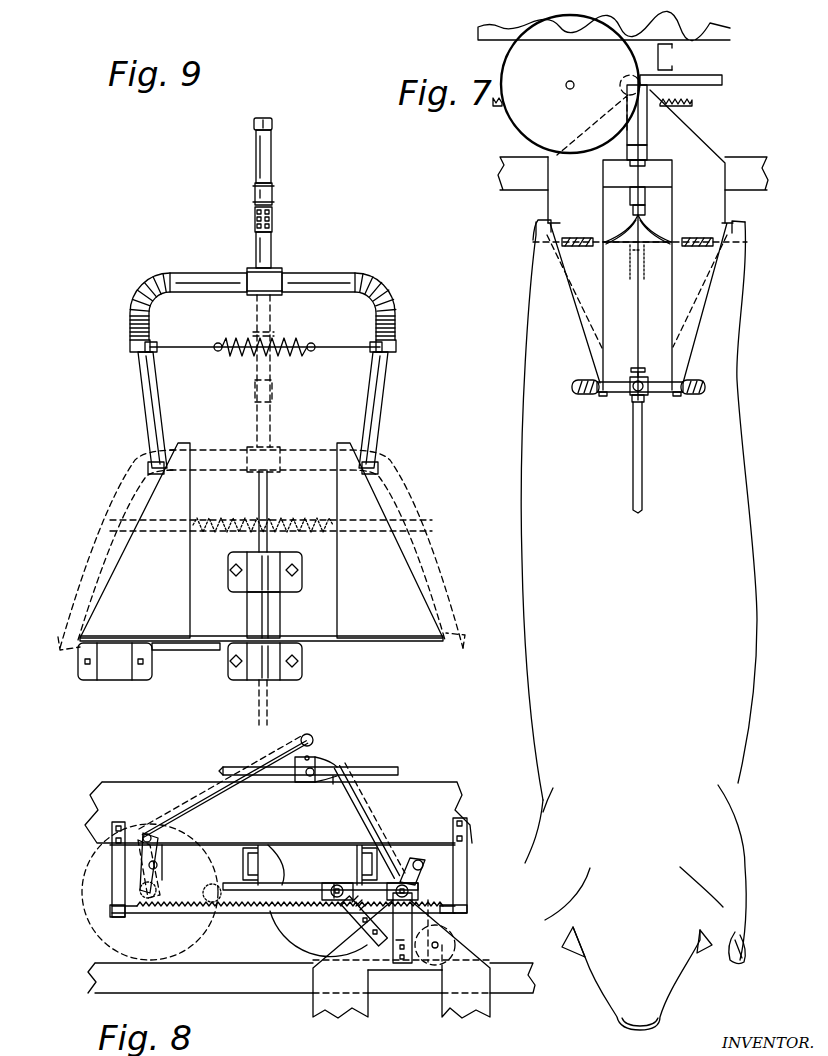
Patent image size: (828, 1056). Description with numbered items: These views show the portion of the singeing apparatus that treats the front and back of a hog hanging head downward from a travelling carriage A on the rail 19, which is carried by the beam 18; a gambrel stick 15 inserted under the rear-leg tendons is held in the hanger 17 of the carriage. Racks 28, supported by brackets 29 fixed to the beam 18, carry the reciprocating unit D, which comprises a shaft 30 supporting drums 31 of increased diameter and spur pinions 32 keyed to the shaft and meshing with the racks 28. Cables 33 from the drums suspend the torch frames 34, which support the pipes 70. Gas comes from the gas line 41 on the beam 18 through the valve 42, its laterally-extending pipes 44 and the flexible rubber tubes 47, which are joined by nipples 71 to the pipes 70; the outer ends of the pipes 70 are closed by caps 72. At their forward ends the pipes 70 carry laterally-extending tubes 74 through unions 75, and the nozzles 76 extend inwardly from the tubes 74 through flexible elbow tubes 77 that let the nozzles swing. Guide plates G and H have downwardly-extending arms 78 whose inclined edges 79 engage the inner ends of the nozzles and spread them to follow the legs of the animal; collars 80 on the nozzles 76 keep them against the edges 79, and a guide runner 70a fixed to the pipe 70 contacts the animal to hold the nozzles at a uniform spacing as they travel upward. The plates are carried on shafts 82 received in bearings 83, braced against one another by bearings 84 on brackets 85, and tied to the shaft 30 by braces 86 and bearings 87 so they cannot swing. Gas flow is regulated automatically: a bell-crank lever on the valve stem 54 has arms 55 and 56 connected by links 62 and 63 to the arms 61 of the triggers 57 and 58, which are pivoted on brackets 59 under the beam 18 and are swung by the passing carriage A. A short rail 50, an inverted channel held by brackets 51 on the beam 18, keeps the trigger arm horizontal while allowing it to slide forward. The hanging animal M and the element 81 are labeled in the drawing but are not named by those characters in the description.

In FIG. 7, the gambrel stick 15 is at (747, 242).
In FIG. 7, the hanger 17 is at (638, 247).
In FIG. 7, the beam 18 is at (730, 33).
In FIG. 8, the beam 18 is at (278, 812).
In FIG. 7, the rail 19 is at (770, 172).
In FIG. 8, the rail 19 is at (311, 978).
In FIG. 7, the racks 28 is at (692, 103).
In FIG. 8, the racks 28 is at (252, 913).
In FIG. 8, the brackets 29 is at (112, 872).
In FIG. 7, the shaft 30 is at (566, 85).
In FIG. 8, the shaft 30 is at (335, 906).
In FIG. 7, the drums 31 is at (598, 115).
In FIG. 8, the spur pinions 32 is at (334, 884).
In FIG. 7, the cables 33 is at (647, 130).
In FIG. 7, the torch frames 34 is at (641, 372).
In FIG. 8, the gas line 41 is at (308, 761).
In FIG. 8, the valve 42 is at (297, 786).
In FIG. 8, the laterally-extending pipes 44 is at (314, 738).
In FIG. 7, the flexible tubes 47 is at (642, 488).
In FIG. 7, the short rail 50 is at (722, 80).
In FIG. 8, the short rail 50 is at (232, 886).
In FIG. 7, the brackets 51 is at (672, 57).
In FIG. 8, the brackets 51 is at (258, 862).
In FIG. 8, the valve stem 54 is at (302, 783).
In FIG. 8, the arm 55 is at (333, 784).
In FIG. 8, the arm 56 is at (281, 781).
In FIG. 8, the triggers 57 is at (465, 868).
In FIG. 8, the trigger 58 is at (158, 884).
In FIG. 8, the brackets 59 is at (432, 847).
In FIG. 8, the arms 61 is at (160, 862).
In FIG. 8, the link 62 is at (380, 820).
In FIG. 8, the link 63 is at (172, 818).
In FIG. 9, the pipes 70 is at (265, 166).
In FIG. 9, the guide runner 70a is at (272, 219).
In FIG. 9, the nipples 71 is at (272, 195).
In FIG. 9, the caps 72 is at (272, 125).
In FIG. 7, the caps 72 is at (632, 398).
In FIG. 9, the laterally-extending tubes 74 is at (205, 280).
In FIG. 7, the laterally-extending tubes 74 is at (617, 394).
In FIG. 9, the unions 75 is at (271, 276).
In FIG. 7, the unions 75 is at (643, 398).
In FIG. 9, the nozzles 76 is at (140, 394).
In FIG. 9, the flexible elbow tubes 77 is at (136, 281).
In FIG. 7, the flexible elbow tubes 77 is at (572, 385).
In FIG. 9, the downwardly-extending arms 78 is at (261, 542).
In FIG. 7, the downwardly-extending arms 78 is at (640, 303).
In FIG. 8, the downwardly-extending arms 78 is at (401, 959).
In FIG. 9, the inclined edges 79 is at (115, 556).
In FIG. 7, the inclined edges 79 is at (575, 333).
In FIG. 9, the collars 80 is at (150, 469).
In FIG. 9, the spring 81 is at (304, 343).
In FIG. 8, the shafts 82 is at (452, 940).
In FIG. 9, the bearings 83 is at (302, 678).
In FIG. 9, the bearings 84 is at (302, 569).
In FIG. 8, the bearings 84 is at (420, 895).
In FIG. 9, the brackets 85 is at (280, 608).
In FIG. 7, the brackets 85 is at (647, 154).
In FIG. 8, the brackets 85 is at (414, 935).
In FIG. 9, the braces 86 is at (182, 651).
In FIG. 8, the braces 86 is at (349, 936).
In FIG. 9, the bearings 87 is at (118, 672).
In FIG. 7, the travelling carriage A is at (645, 200).
In FIG. 8, the travelling carriage A is at (515, 955).
In FIG. 7, the reciprocating unit D is at (570, 84).
In FIG. 9, the guide plate G is at (405, 648).
In FIG. 7, the guide plate H is at (636, 240).
In FIG. 8, the guide plate H is at (370, 1010).
In FIG. 7, the carcass M is at (740, 592).